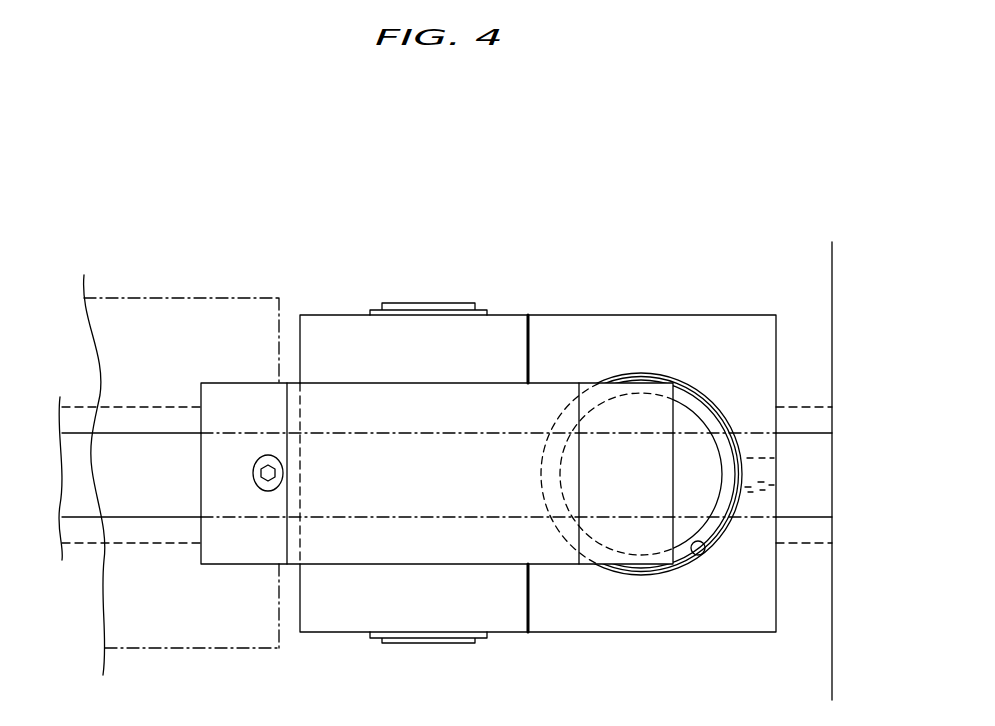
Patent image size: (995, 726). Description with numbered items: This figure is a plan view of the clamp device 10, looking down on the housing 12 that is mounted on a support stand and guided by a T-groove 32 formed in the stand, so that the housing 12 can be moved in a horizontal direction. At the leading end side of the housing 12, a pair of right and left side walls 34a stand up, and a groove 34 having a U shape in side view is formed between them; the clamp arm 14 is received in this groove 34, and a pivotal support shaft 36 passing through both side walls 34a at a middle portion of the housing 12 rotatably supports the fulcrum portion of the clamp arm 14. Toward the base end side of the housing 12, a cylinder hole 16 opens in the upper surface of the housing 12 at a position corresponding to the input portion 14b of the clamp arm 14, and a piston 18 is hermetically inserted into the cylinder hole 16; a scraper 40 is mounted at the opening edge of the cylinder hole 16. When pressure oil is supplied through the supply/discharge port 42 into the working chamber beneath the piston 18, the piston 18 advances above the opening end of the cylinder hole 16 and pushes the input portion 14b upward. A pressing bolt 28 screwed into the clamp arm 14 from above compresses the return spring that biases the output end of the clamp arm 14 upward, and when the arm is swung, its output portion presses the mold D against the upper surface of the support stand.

The clamp device 10 is at (374, 230).
The housing 12 is at (541, 308).
The clamp arm 14 is at (247, 572).
The input portion 14b is at (640, 412).
The cylinder hole 16 is at (706, 552).
The piston 18 is at (706, 388).
The pressing bolt 28 is at (258, 455).
The T-groove 32 is at (794, 436).
The groove 34 is at (405, 392).
The side walls 34a is at (348, 345).
The pivotal support shaft 36 is at (428, 302).
The scraper 40 is at (660, 575).
The supply/discharge port 42 is at (766, 483).
The mold D is at (170, 297).